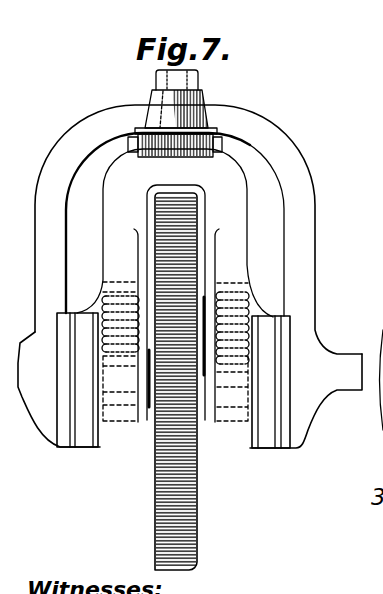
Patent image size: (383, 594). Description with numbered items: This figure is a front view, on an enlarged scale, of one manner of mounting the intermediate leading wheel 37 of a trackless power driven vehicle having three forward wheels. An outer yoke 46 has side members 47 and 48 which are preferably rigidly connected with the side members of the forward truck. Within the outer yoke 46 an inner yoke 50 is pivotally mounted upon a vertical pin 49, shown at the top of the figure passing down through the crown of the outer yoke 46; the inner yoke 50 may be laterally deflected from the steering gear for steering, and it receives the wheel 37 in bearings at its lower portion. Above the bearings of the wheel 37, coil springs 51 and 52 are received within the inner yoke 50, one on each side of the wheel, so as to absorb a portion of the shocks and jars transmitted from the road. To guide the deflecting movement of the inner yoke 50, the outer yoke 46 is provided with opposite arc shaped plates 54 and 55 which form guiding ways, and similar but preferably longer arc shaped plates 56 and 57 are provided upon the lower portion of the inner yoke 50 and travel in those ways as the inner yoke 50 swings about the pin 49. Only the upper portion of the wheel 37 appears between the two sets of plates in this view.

The wheel 37 is at (197, 531).
The yoke 46 is at (303, 263).
The side member 47 is at (22, 400).
The side member 48 is at (347, 380).
The vertical pin 49 is at (177, 103).
The inner yoke 50 is at (223, 173).
The coil spring 51 is at (250, 303).
The coil spring 52 is at (100, 283).
The arc shaped plate 54 is at (75, 447).
The arc shaped plate 55 is at (282, 448).
The arc shaped plate 56 is at (98, 447).
The arc shaped plate 57 is at (260, 443).